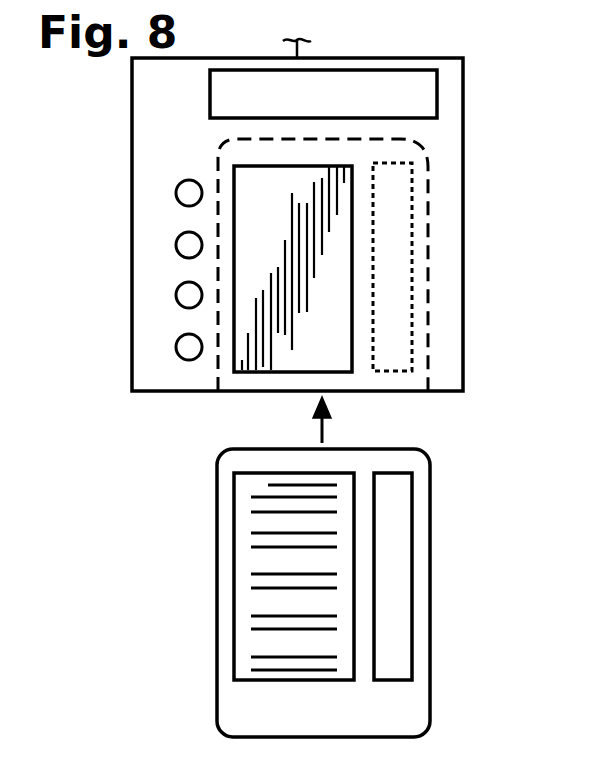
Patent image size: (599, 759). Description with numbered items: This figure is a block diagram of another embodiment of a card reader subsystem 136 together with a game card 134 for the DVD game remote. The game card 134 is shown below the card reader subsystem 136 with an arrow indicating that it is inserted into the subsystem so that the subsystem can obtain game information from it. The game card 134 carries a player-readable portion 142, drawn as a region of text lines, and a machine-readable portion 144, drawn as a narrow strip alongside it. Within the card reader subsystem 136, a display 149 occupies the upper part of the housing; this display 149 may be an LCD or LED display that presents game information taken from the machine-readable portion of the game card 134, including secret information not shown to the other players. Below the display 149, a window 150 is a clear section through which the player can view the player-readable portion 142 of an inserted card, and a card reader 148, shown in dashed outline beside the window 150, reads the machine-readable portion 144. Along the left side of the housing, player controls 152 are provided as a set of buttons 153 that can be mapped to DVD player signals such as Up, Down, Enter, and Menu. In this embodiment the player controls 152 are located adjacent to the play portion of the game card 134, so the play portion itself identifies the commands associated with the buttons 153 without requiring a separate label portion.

The card reader subsystem 136 is at (465, 115).
The display 149 is at (375, 70).
The window 150 is at (268, 175).
The card reader 148 is at (413, 200).
The buttons 153 is at (175, 245).
The player controls 152 is at (175, 347).
The game card 134 is at (217, 535).
The player-readable portion 142 is at (252, 603).
The machine-readable portion 144 is at (400, 520).